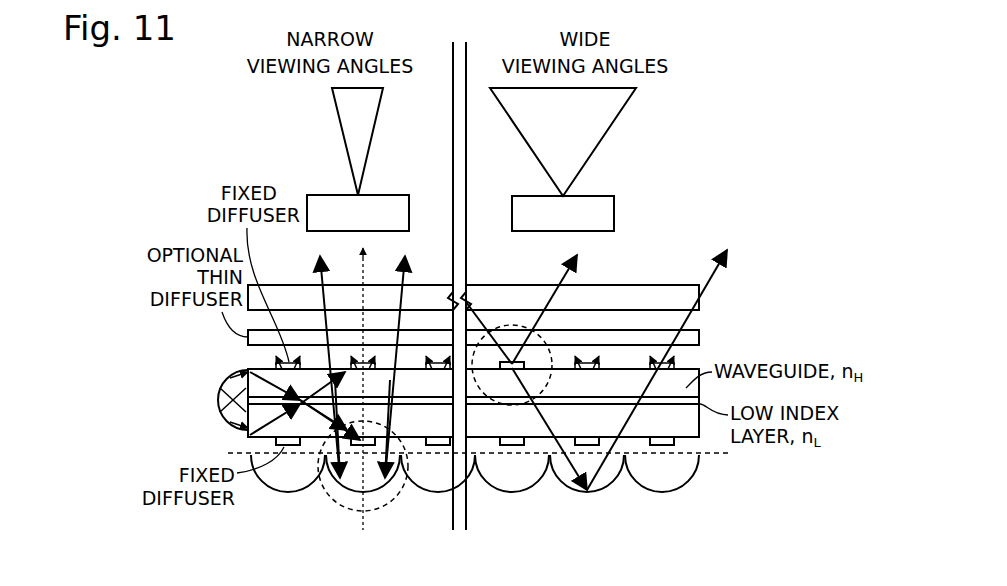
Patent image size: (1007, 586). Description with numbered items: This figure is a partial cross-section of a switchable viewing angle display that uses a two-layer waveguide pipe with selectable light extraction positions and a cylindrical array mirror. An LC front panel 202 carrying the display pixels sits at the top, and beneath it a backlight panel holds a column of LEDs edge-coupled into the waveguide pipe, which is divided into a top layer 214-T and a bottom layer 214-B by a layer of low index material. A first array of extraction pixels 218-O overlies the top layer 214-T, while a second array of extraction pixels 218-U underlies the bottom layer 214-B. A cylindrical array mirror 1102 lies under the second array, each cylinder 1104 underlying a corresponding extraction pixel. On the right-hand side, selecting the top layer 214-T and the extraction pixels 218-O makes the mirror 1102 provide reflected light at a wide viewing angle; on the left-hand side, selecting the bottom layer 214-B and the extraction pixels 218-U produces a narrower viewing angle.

The LC front panel 202 is at (650, 298).
The top layer of waveguide pipe 214-T is at (636, 393).
The bottom layer of waveguide pipe 214-B is at (617, 426).
The first array of extraction pixels 218-O is at (680, 363).
The second array of extraction pixels 218-U is at (662, 447).
The cylindrical array mirror 1102 is at (712, 455).
The cylinder 1104 is at (288, 493).